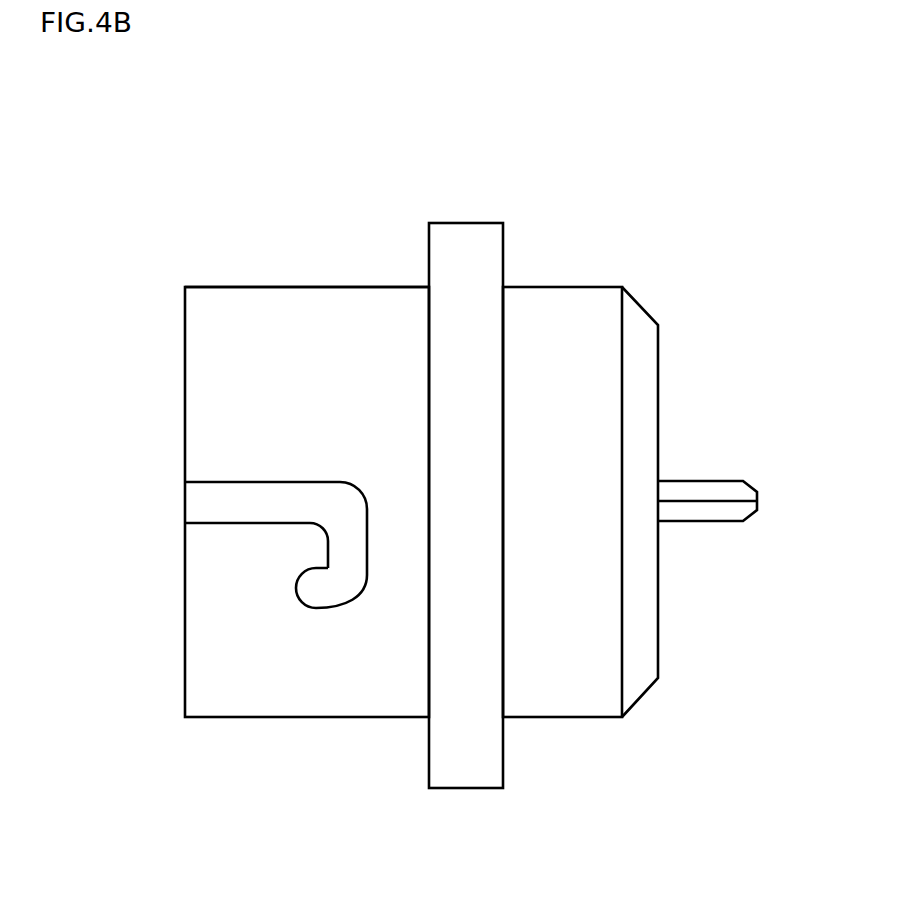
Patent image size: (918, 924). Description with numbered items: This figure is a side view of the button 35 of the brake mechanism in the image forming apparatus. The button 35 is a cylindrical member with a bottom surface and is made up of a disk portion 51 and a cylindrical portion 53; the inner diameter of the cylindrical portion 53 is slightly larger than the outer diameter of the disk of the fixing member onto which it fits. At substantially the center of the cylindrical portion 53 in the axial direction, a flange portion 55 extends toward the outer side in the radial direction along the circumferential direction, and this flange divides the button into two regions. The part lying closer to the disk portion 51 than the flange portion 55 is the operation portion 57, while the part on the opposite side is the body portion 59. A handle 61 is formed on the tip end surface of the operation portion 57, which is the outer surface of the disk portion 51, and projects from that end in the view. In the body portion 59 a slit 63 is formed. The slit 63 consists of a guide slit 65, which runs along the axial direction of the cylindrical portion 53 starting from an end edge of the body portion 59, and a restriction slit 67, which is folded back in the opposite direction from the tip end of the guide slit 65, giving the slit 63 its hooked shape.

The button 35 is at (356, 234).
The disk portion 51 is at (638, 653).
The cylindrical portion 53 is at (355, 690).
The flange portion 55 is at (460, 268).
The operation portion 57 is at (575, 330).
The body portion 59 is at (235, 335).
The handle 61 is at (707, 510).
The slit 63 is at (178, 830).
The guide slit 65 is at (230, 507).
The restriction slit 67 is at (337, 582).